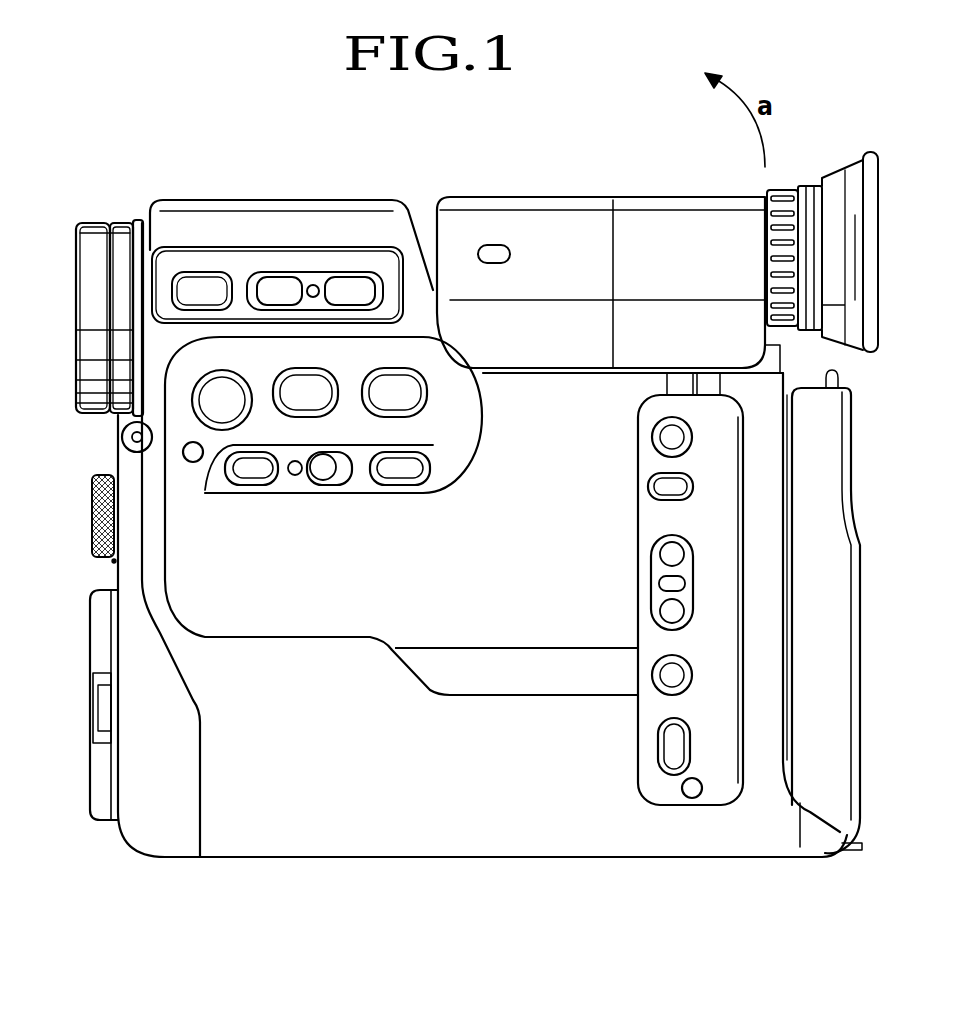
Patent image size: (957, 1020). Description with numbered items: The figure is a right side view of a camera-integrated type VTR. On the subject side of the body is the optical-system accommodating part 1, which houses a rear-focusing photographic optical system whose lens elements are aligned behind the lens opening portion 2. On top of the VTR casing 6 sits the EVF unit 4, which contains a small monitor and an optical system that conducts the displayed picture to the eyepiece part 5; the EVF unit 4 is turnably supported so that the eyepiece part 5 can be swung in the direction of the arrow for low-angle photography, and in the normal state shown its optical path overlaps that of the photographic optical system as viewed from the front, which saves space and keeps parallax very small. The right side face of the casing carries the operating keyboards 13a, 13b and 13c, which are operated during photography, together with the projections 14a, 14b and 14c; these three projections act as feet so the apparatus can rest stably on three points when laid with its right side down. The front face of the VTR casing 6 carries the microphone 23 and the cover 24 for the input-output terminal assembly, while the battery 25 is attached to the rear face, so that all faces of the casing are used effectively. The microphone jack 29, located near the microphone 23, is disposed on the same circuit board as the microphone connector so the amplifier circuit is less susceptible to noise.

The optical-system accommodating part 1 is at (350, 200).
The lens opening portion 2 is at (90, 295).
The EVF unit 4 is at (696, 196).
The eyepiece part 5 is at (842, 257).
The VTR casing 6 is at (517, 668).
The operating keyboard 13a is at (238, 268).
The operating keyboard 13b is at (460, 425).
The operating keyboard 13c is at (720, 512).
The projection 14a is at (495, 247).
The projection 14b is at (193, 463).
The projection 14c is at (692, 800).
The microphone 23 is at (92, 531).
The cover 24 is at (100, 778).
The battery 25 is at (852, 597).
The microphone jack 29 is at (120, 433).